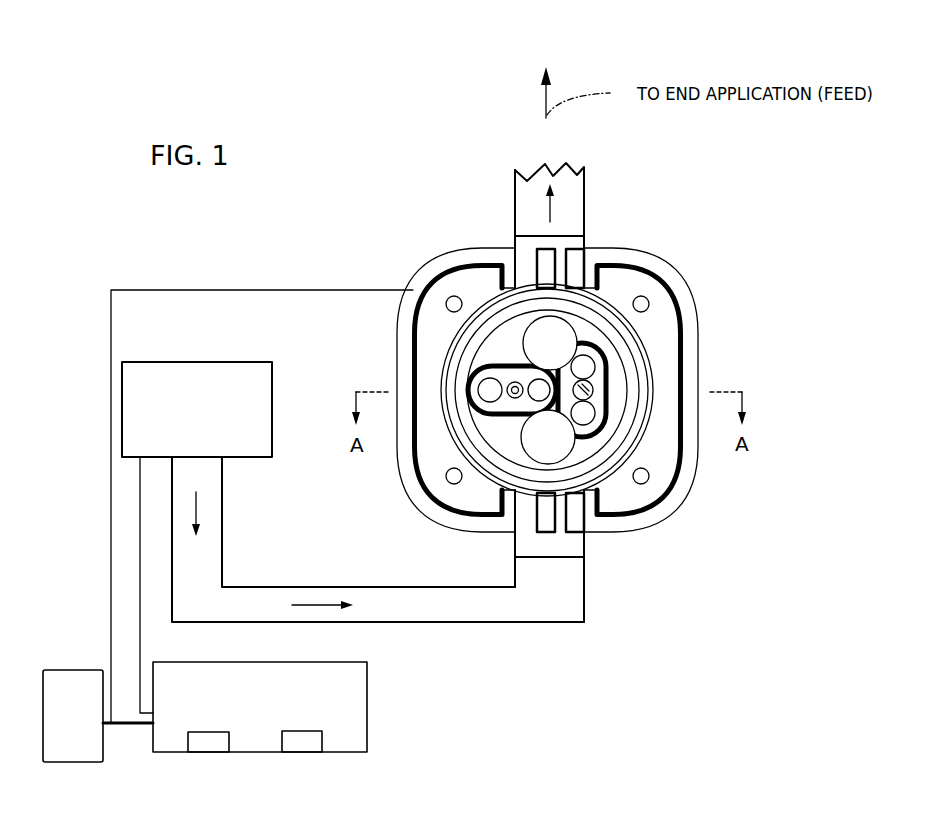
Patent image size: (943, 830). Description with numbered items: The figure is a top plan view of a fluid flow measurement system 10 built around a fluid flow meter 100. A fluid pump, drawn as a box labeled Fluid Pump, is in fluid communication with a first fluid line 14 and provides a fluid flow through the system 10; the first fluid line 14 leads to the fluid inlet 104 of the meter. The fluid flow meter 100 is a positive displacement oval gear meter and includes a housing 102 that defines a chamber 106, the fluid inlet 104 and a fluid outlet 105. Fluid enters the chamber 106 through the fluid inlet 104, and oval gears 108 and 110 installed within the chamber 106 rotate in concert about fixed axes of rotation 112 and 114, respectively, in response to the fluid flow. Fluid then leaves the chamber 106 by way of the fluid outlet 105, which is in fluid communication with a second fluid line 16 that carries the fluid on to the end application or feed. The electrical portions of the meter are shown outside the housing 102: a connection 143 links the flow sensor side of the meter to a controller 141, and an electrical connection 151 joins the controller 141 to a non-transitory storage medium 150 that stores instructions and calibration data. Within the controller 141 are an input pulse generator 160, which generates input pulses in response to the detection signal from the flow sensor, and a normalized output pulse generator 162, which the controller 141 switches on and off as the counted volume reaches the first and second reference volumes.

The fluid flow measurement system 10 is at (232, 219).
The first fluid line 14 is at (420, 603).
The second fluid line 16 is at (569, 192).
The fluid flow meter 100 is at (208, 378).
The housing 102 is at (653, 274).
The fluid inlet 104 is at (565, 555).
The fluid outlet 105 is at (569, 232).
The chamber 106 is at (553, 440).
The oval gear 108 is at (588, 388).
The oval gear 110 is at (513, 389).
The fixed axis of rotation 112 is at (589, 394).
The fixed axis of rotation 114 is at (487, 388).
The controller 141 is at (368, 683).
The connection 143 is at (110, 300).
The non-transitory storage medium 150 is at (65, 750).
The electrical connection 151 is at (118, 726).
The input pulse generator 160 is at (202, 755).
The normalized output pulse generator 162 is at (303, 754).